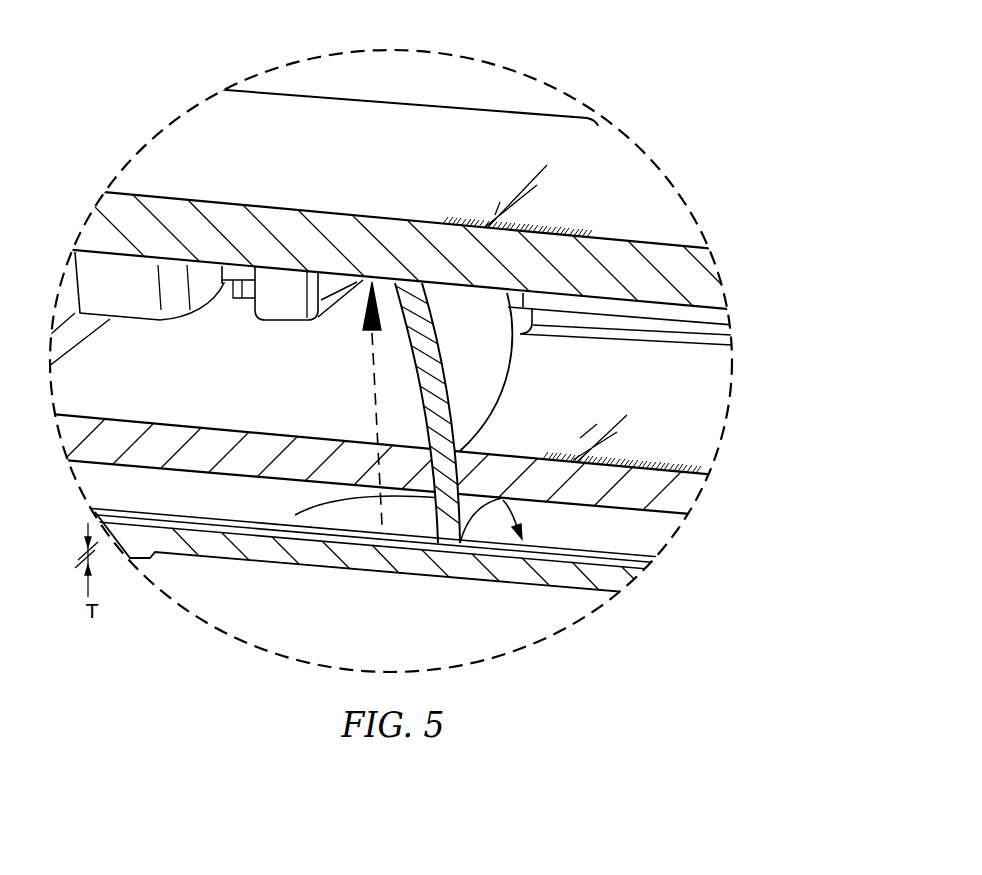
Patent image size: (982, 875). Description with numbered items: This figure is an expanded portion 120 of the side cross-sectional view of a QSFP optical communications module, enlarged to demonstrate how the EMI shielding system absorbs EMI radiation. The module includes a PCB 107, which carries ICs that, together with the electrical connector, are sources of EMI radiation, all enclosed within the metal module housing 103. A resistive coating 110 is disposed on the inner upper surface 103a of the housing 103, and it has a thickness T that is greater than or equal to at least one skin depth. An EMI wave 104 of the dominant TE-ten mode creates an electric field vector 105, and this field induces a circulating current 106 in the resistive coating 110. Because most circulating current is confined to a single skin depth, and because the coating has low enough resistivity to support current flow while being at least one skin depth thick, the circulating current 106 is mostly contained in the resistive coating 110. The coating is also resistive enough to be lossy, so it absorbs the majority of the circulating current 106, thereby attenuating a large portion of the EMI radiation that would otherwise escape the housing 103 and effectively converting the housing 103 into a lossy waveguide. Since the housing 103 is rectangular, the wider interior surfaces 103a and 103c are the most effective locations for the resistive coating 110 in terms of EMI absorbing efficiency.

The module housing 103 is at (352, 152).
The inner surface of housing 103a is at (503, 557).
The housing surface 103c is at (348, 282).
The EMI wave 104 is at (447, 515).
The electric field vector 105 is at (372, 376).
The circulating current 106 is at (330, 498).
The PCB 107 is at (230, 389).
The resistive coating 110 is at (350, 520).
The expanded portion 120 is at (566, 95).